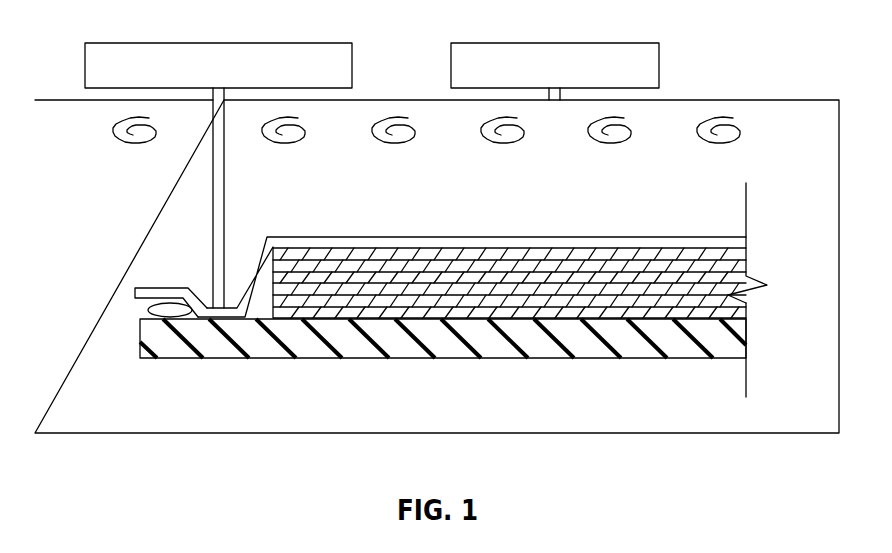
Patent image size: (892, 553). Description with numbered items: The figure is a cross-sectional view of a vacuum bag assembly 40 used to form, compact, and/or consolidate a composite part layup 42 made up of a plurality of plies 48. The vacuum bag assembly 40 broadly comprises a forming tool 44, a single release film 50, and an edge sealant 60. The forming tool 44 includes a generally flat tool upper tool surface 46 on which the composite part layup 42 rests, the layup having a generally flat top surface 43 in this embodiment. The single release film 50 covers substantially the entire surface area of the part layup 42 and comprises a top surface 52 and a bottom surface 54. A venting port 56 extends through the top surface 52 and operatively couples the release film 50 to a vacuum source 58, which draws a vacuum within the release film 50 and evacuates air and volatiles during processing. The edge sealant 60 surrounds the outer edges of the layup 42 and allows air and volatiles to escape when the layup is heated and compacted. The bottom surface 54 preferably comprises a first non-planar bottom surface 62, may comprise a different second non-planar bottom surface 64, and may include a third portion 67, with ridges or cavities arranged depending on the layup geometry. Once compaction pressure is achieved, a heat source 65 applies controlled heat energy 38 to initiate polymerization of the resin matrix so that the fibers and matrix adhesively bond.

The vacuum source 58 is at (220, 43).
The heat source 65 is at (557, 43).
The heat energy 38 is at (122, 147).
The venting port 56 is at (227, 228).
The single release film 50 is at (150, 293).
The top surface 52 is at (300, 237).
The edge sealant 60 is at (147, 313).
The bottom surface 54 is at (373, 248).
The third portion 67 is at (423, 248).
The first non-planar bottom surface 62 is at (480, 248).
The top surface 43 is at (540, 248).
The second non-planar bottom surface 64 is at (598, 248).
The plies 48 is at (685, 278).
The composite part layup 42 is at (748, 257).
The tool upper tool surface 46 is at (748, 317).
The forming tool 44 is at (220, 349).
The vacuum bag assembly 40 is at (645, 206).